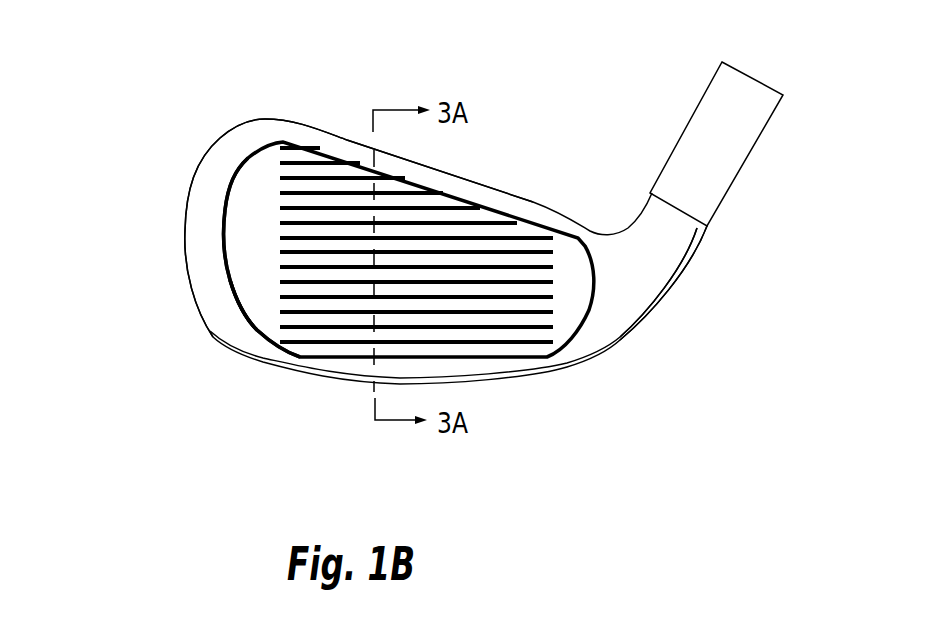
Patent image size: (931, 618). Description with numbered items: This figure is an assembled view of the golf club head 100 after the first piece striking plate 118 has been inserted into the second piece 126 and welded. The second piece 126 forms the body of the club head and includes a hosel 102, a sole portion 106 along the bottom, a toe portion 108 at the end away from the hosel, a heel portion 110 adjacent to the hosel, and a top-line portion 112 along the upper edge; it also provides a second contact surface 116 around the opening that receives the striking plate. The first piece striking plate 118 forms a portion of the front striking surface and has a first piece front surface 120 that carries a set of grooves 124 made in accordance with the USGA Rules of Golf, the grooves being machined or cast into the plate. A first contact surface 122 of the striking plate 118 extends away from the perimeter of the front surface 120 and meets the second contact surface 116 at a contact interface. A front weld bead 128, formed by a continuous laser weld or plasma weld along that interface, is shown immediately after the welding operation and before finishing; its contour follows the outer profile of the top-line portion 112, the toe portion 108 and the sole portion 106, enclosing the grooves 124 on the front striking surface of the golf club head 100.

The golf club head 100 is at (106, 105).
The hosel 102 is at (683, 160).
The sole portion 106 is at (416, 447).
The toe portion 108 is at (115, 324).
The heel portion 110 is at (678, 370).
The top-line portion 112 is at (544, 162).
The second contact surface 116 is at (228, 188).
The first piece striking plate 118 is at (255, 299).
The first piece front surface 120 is at (244, 252).
The first contact surface 122 is at (243, 283).
The grooves 124 is at (526, 334).
The second piece 126 is at (260, 111).
The front weld bead 128 is at (237, 159).